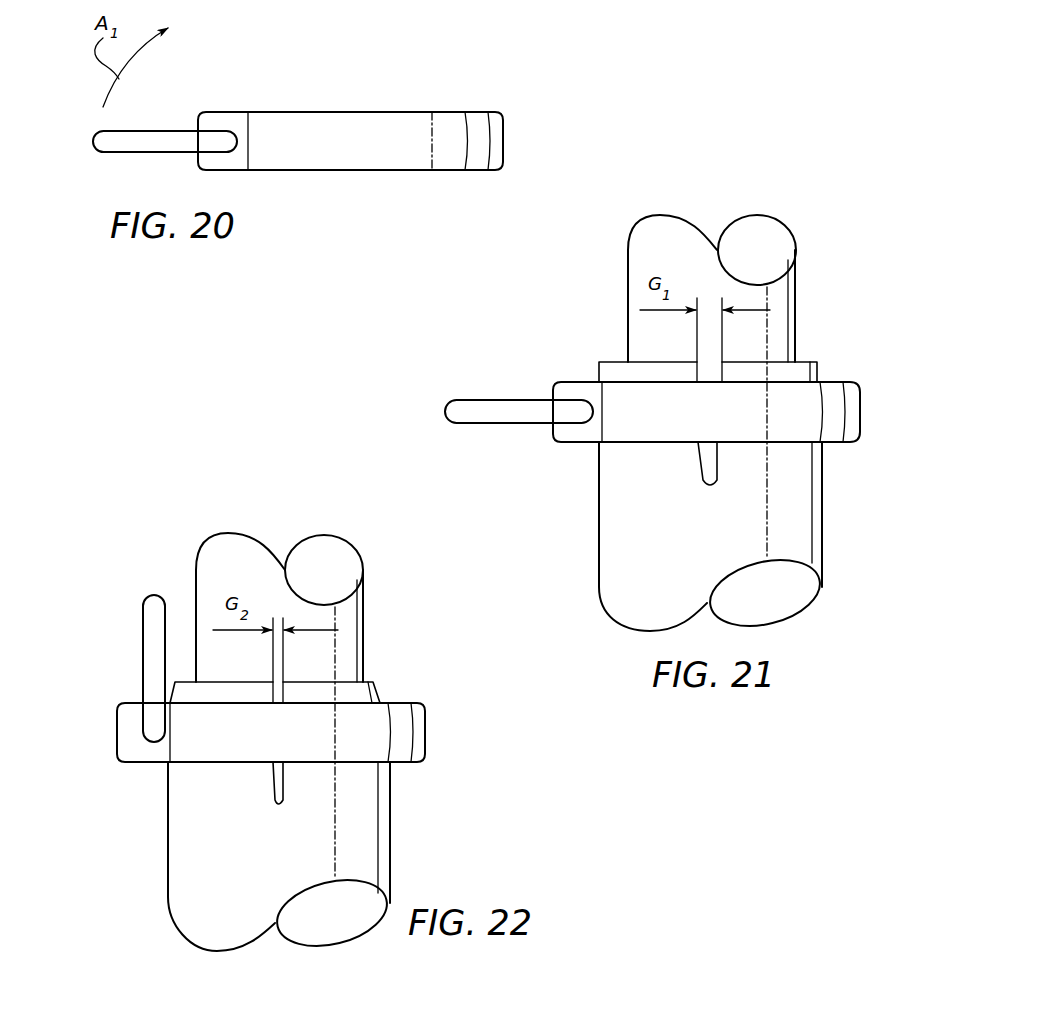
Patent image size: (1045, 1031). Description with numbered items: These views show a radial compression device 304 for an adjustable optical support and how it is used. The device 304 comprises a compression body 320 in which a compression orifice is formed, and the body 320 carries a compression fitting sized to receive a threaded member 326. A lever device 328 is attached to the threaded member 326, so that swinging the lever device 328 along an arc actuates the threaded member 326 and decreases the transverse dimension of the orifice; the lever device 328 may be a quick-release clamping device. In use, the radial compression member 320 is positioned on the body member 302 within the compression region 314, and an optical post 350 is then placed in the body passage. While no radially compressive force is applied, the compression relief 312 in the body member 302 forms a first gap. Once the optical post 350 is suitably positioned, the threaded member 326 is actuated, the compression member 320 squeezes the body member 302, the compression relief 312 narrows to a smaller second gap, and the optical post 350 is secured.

In FIG. 21, the body member 302 is at (597, 505).
In FIG. 22, the body member 302 is at (167, 845).
In FIG. 20, the radial compression device 304 is at (472, 81).
In FIG. 21, the compression relief 312 is at (715, 487).
In FIG. 22, the compression relief 312 is at (283, 807).
In FIG. 21, the compression region 314 is at (445, 360).
In FIG. 20, the compression body 320 is at (507, 141).
In FIG. 21, the compression body 320 is at (860, 412).
In FIG. 22, the compression body 320 is at (428, 734).
In FIG. 21, the threaded member 326 is at (520, 400).
In FIG. 22, the threaded member 326 is at (140, 670).
In FIG. 20, the lever device 328 is at (150, 152).
In FIG. 21, the optical post 350 is at (795, 311).
In FIG. 22, the optical post 350 is at (363, 632).